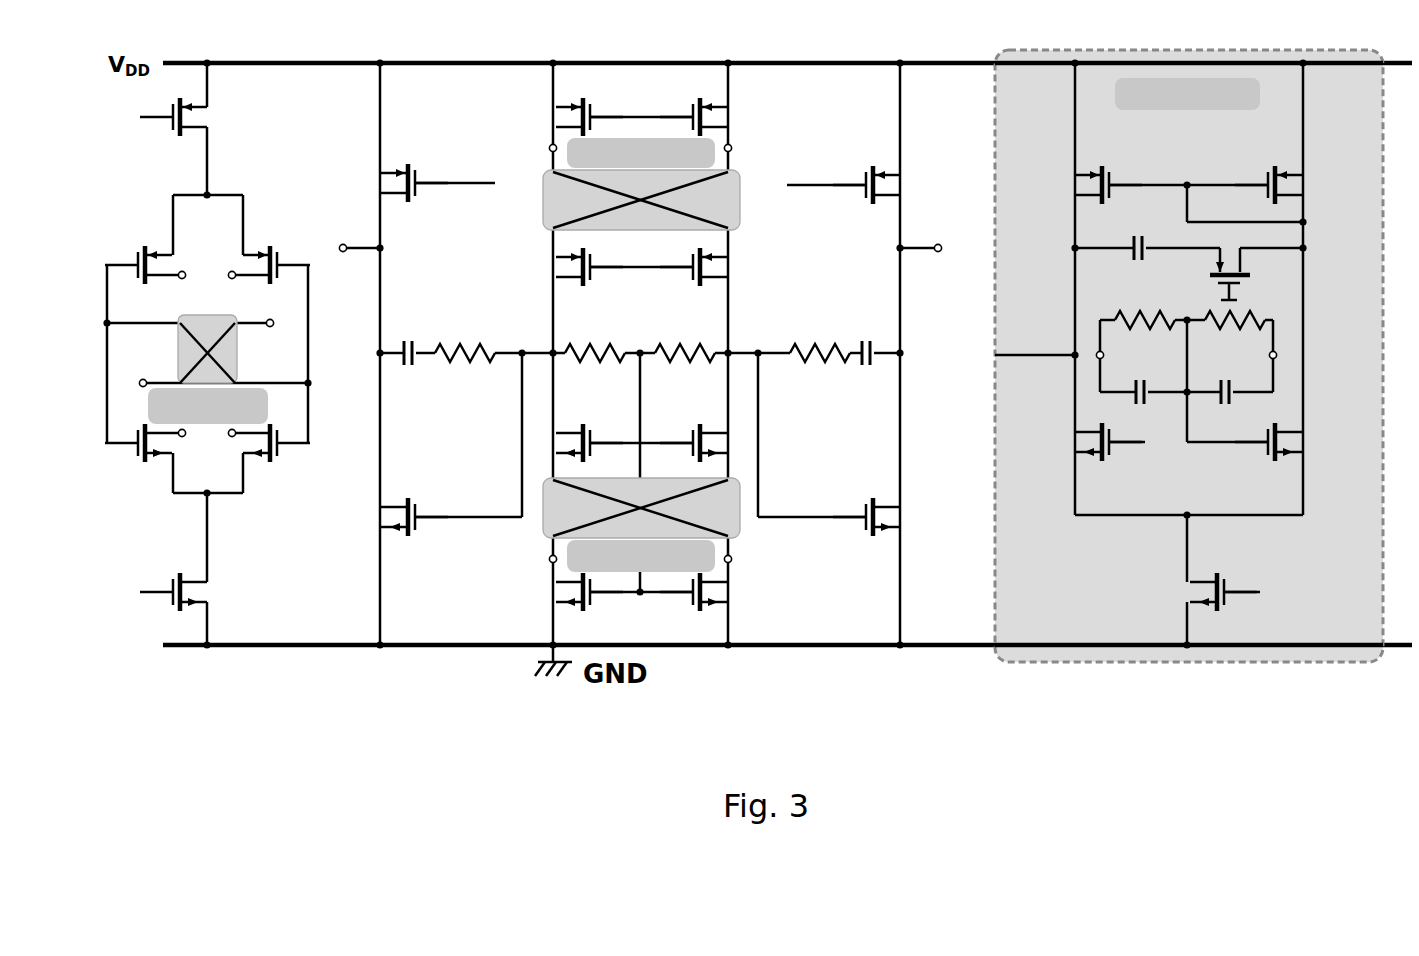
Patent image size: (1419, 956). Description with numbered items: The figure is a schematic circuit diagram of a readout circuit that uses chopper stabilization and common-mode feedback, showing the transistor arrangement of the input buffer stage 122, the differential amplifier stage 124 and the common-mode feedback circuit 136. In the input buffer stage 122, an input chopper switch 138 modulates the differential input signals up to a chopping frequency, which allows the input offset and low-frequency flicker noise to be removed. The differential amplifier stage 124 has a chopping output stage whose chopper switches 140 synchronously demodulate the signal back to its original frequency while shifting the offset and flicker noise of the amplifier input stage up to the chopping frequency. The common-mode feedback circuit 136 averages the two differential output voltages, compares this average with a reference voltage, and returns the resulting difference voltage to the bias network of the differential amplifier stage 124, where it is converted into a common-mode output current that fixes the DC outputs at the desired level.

The input buffer stage 122 is at (194, 402).
The differential amplifier stage 124 is at (635, 403).
The common-mode feedback (CMFB) circuit 136 is at (1388, 685).
The input chopper switch 138 is at (178, 345).
The chopper switches 140 is at (736, 222).